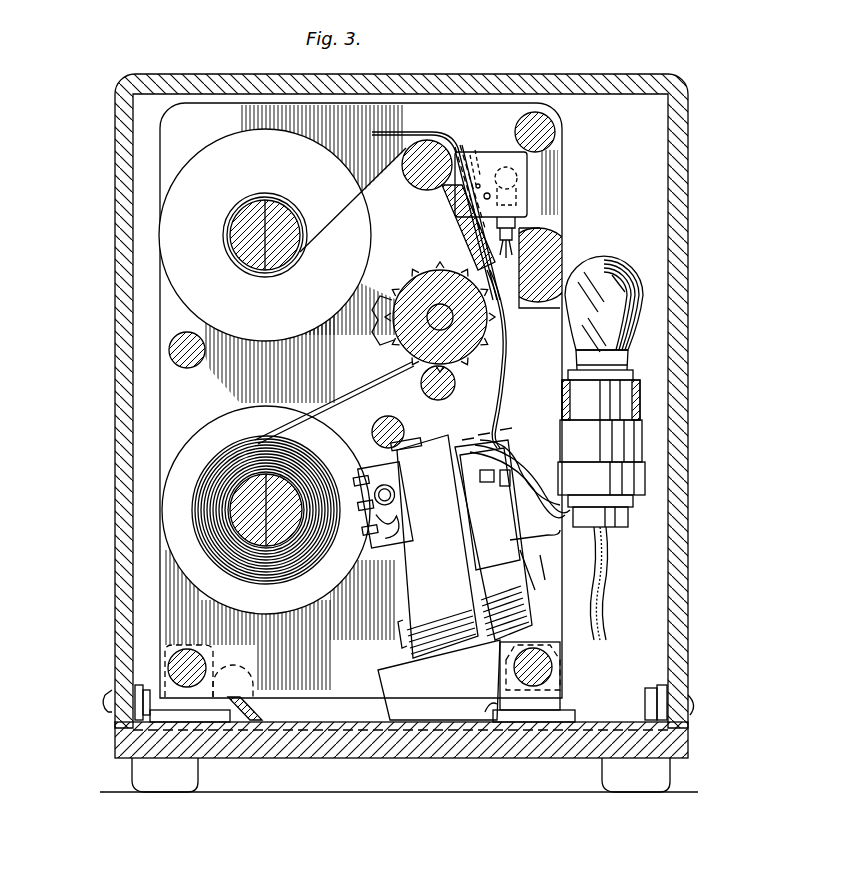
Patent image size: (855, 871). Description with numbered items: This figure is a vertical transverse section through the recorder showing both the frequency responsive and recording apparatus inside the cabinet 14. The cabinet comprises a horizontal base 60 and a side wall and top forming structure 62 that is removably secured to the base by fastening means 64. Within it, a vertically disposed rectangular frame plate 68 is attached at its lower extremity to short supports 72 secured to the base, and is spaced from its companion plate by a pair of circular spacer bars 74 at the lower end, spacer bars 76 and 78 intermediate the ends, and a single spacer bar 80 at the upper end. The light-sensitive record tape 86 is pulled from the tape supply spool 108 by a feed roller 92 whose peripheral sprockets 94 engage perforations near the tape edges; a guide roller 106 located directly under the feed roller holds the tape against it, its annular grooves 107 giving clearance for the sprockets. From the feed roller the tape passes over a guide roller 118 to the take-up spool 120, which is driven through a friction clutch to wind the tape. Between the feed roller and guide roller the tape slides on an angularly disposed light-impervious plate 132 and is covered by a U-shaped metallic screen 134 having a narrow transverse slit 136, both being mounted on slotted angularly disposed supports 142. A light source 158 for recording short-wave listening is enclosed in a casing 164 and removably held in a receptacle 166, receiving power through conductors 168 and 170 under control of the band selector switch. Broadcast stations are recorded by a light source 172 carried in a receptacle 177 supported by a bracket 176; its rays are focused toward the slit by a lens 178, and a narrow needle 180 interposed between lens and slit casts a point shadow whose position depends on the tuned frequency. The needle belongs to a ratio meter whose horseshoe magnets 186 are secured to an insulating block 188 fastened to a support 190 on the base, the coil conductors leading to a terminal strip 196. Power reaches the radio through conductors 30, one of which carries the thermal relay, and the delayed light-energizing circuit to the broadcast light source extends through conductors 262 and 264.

The cabinet 14 is at (118, 470).
The conductors 30 is at (255, 708).
The horizontal base 60 is at (440, 760).
The side wall and top forming structure 62 is at (462, 82).
The fastening means 64 is at (112, 700).
The frame plate 68 is at (170, 133).
The supports 72 is at (160, 690).
The circular spacer bars 74 is at (207, 668).
The spacer bar 76 is at (390, 426).
The spacer bar 78 is at (170, 357).
The spacer bar 80 is at (556, 136).
The light-sensitive record tape 86 is at (366, 384).
The feed roller 92 is at (395, 302).
The peripheral sprockets 94 is at (375, 325).
The guide roller 106 is at (438, 400).
The annular grooves 107 is at (455, 380).
The tape supply spool 108 is at (272, 618).
The guide roller 118 is at (410, 180).
The take-up spool 120 is at (265, 235).
The light-impervious plate 132 is at (450, 220).
The metallic screen 134 is at (428, 124).
The transverse slit 136 is at (460, 262).
The slotted angularly disposed supports 142 is at (455, 147).
The light source 158 is at (515, 190).
The casing 164 is at (485, 158).
The receptacle 166 is at (516, 232).
The conductor 168 is at (514, 308).
The conductor 170 is at (514, 330).
The light source 172 is at (600, 256).
The bracket 176 is at (642, 400).
The receptacle 177 is at (642, 452).
The lens 178 is at (548, 255).
The needle 180 is at (508, 376).
The horseshoe magnets 186 is at (400, 594).
The insulating block 188 is at (478, 620).
The support 190 is at (439, 680).
The terminal strip 196 is at (525, 585).
The conductor 262 is at (606, 592).
The conductor 264 is at (604, 616).